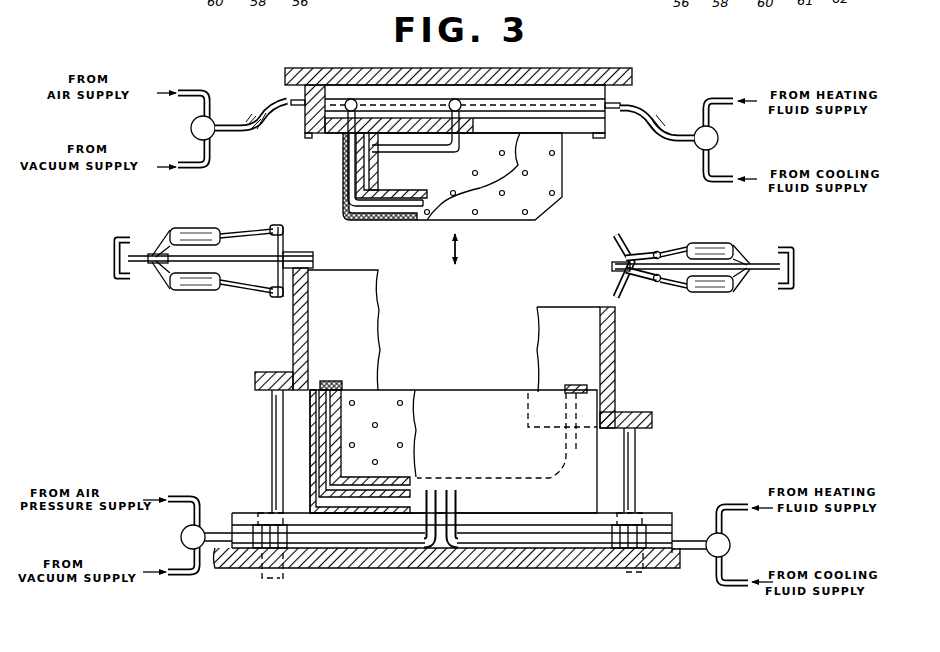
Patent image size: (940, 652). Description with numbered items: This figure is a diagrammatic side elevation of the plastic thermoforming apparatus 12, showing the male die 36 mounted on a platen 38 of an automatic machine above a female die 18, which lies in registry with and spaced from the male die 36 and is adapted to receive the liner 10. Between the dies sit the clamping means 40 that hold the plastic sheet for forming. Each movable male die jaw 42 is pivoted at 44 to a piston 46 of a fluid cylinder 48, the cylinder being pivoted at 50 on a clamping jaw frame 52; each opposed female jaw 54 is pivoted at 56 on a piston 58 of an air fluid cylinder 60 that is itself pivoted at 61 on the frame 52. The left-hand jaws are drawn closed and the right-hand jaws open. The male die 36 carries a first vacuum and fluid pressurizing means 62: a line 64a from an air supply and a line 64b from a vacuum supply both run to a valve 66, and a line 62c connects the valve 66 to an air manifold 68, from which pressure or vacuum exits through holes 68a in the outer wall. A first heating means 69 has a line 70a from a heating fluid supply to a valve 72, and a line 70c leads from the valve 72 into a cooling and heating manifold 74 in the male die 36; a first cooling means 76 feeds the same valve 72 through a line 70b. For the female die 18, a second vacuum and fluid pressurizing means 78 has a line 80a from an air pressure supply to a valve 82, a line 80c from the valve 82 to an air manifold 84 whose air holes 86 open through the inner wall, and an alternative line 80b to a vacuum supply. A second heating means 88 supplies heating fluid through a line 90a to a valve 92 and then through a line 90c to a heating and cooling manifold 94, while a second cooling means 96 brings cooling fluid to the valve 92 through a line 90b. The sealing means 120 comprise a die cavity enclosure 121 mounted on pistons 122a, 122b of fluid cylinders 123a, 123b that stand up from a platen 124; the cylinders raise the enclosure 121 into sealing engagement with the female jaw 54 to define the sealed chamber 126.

The liner 10 is at (337, 381).
The plastic thermoforming apparatus 12 is at (284, 63).
The female die 18 is at (463, 393).
The male die 36 is at (507, 215).
The platen 38 is at (627, 78).
The clamping means 40 is at (449, 261).
The movable male die jaw 42 is at (306, 253).
The pivot 44 is at (275, 224).
The piston 46 is at (246, 230).
The fluid cylinder 48 is at (204, 227).
The pivot 50 is at (165, 232).
The clamping jaw frame 52 is at (158, 270).
The female jaw 54 is at (314, 268).
The pivot 56 is at (275, 298).
The piston 58 is at (241, 293).
The air fluid cylinder 60 is at (198, 292).
The pivot 61 is at (168, 285).
The first vacuum and fluid pressurizing means 62 is at (360, 106).
The line 62c is at (263, 110).
The line 64a is at (190, 88).
The line 64b is at (210, 162).
The valve 66 is at (190, 128).
The air manifold 68 is at (372, 180).
The holes 68a is at (345, 168).
The first heating means 69 is at (449, 104).
The line 70a is at (722, 97).
The line 70b is at (704, 164).
The line 70c is at (650, 125).
The valve 72 is at (719, 138).
The cooling and heating manifold 74 is at (415, 198).
The first cooling means 76 is at (715, 184).
The second vacuum and fluid pressurizing means 78 is at (185, 494).
The line 80a is at (199, 507).
The line 80b is at (183, 578).
The line 80c is at (355, 548).
The valve 82 is at (181, 538).
The air manifold 84 is at (357, 490).
The air holes 86 is at (353, 441).
The second heating means 88 is at (738, 501).
The line 90a is at (740, 512).
The line 90b is at (716, 573).
The line 90c is at (530, 548).
The valve 92 is at (731, 548).
The heating and cooling manifold 94 is at (411, 492).
The second cooling means 96 is at (735, 587).
The sealing means 120 is at (290, 341).
The die cavity enclosure 121 is at (380, 352).
The piston 122a is at (272, 413).
The piston 122b is at (637, 464).
The fluid cylinder 123a is at (288, 584).
The fluid cylinder 123b is at (640, 576).
The platen 124 is at (424, 560).
The sealed chamber 126 is at (380, 293).